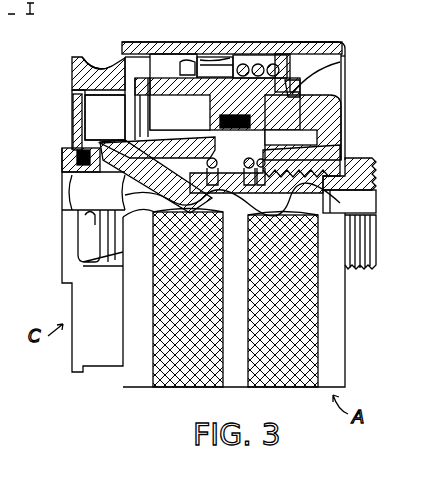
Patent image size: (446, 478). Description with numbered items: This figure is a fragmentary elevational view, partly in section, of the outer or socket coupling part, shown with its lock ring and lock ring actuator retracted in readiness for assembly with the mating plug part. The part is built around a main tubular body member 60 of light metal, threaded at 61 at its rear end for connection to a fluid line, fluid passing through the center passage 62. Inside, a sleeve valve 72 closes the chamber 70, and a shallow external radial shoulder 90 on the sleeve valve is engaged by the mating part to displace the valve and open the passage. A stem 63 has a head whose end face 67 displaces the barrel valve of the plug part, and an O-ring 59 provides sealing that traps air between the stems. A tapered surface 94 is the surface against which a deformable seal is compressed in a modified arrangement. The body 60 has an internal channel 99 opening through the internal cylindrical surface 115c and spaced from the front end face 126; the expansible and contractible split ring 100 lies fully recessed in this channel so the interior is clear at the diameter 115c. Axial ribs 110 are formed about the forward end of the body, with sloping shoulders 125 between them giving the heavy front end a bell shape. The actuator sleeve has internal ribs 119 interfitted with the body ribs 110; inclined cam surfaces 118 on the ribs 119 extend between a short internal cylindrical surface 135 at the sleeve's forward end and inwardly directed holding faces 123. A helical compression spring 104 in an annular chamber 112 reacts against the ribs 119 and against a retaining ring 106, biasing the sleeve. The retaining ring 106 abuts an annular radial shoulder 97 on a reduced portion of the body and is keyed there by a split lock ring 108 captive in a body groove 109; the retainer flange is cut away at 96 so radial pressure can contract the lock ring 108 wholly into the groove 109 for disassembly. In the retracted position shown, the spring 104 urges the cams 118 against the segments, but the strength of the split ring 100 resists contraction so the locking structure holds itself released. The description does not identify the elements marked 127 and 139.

The O-ring 59 is at (85, 130).
The main tubular body member 60 is at (332, 103).
The threaded rear end 61 is at (357, 268).
The center passage 62 is at (362, 210).
The stem 63 is at (132, 216).
The end face 67 is at (62, 162).
The chamber 70 is at (195, 116).
The sleeve valve 72 is at (156, 158).
The external radial shoulder 90 is at (150, 126).
The conical or tapered surface 94 is at (105, 140).
The relieved portions of retainer flange 96 is at (292, 80).
The annular radial shoulder 97 is at (340, 68).
The internal channel 99 is at (129, 112).
The split ring 100 is at (133, 55).
The helical coil compression spring 104 is at (241, 57).
The retaining ring 106 is at (297, 50).
The lock ring 108 is at (302, 92).
The groove 109 is at (297, 100).
The axial ribs 110 is at (100, 64).
The annular chamber 112 is at (258, 56).
The internal cylindrical surface 115c is at (113, 138).
The cam surfaces 118 is at (138, 72).
The sleeve ribs 119 is at (216, 57).
The holding faces 123 is at (185, 62).
The sloping shoulders 125 is at (122, 60).
The front end face 126 is at (72, 67).
The seal 127 is at (205, 57).
The cylindrical surface 135 is at (118, 57).
The cap 139 is at (320, 44).